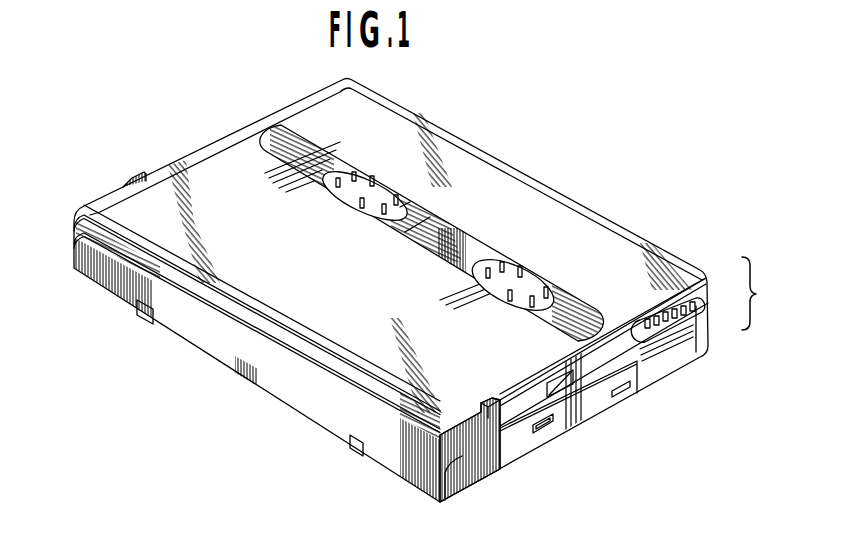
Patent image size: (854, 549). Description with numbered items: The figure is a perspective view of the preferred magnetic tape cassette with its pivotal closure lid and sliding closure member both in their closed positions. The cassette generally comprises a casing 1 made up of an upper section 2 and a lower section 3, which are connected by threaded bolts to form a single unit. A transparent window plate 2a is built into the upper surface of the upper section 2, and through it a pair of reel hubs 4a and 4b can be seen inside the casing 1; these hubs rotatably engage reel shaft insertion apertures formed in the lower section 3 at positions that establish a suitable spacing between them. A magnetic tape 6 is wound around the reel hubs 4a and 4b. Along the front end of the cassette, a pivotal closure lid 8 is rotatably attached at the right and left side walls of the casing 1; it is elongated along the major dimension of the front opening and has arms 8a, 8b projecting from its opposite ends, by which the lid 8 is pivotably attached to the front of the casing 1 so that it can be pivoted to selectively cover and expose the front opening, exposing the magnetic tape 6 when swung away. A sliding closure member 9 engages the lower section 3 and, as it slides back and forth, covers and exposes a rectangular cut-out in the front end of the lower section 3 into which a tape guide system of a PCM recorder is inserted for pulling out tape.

The casing 1 is at (780, 310).
The upper section 2 is at (704, 290).
The transparent window plate 2a is at (597, 308).
The lower section 3 is at (709, 326).
The reel hub 4a is at (330, 172).
The reel hub 4b is at (503, 256).
The magnetic tape 6 is at (441, 226).
The pivotal closure lid 8 is at (221, 357).
The arm 8a is at (115, 195).
The arm 8b is at (492, 442).
The sliding closure member 9 is at (597, 408).